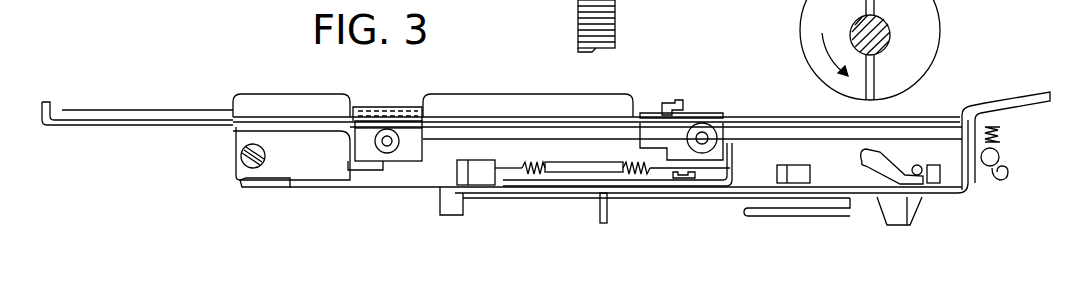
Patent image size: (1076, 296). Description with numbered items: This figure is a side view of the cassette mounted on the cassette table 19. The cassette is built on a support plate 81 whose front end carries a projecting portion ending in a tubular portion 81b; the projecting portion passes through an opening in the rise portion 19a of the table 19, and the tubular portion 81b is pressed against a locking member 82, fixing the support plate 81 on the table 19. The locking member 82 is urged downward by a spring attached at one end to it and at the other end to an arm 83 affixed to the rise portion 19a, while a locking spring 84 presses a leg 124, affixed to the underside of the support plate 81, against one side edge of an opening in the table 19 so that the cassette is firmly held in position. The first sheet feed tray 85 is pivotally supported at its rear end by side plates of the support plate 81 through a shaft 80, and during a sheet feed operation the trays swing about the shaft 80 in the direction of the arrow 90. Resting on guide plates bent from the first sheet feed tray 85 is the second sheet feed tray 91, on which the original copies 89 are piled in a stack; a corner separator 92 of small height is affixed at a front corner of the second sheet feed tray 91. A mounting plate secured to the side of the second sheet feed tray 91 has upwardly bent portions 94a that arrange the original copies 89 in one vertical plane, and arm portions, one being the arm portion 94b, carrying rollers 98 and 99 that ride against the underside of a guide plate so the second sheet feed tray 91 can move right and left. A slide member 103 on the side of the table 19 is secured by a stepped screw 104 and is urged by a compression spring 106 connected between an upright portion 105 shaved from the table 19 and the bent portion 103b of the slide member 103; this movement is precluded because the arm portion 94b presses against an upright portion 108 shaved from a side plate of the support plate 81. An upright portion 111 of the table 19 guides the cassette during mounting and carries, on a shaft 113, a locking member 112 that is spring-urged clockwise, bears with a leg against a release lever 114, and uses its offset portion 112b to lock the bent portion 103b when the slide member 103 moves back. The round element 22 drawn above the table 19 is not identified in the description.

The cassette table 19 is at (483, 193).
The rise portion 19a is at (972, 108).
The wheel 22 is at (936, 25).
The shaft 80 is at (243, 174).
The support plate 81 is at (298, 186).
The tubular portion 81b is at (1008, 177).
The locking member 82 is at (999, 157).
The arm 83 is at (995, 112).
The locking spring 84 is at (1003, 135).
The first sheet feed tray 85 is at (240, 133).
The original copies 89 is at (126, 108).
The arrow 90 is at (608, 54).
The second sheet feed tray 91 is at (118, 126).
The corner separator 92 is at (672, 101).
The upwardly bent portions 94a is at (423, 100).
The arm portion 94b is at (368, 162).
The roller 98 is at (392, 154).
The roller 99 is at (704, 124).
The slide member 103 is at (523, 187).
The bent portion 103b is at (734, 165).
The stepped screw 104 is at (680, 179).
The upright portion 105 is at (456, 162).
The compression spring 106 is at (540, 170).
The upright portion 108 is at (352, 172).
The upright portion 111 is at (818, 176).
The locking member 112 is at (918, 205).
The offset portion 112b is at (862, 152).
The shaft 113 is at (926, 145).
The release lever 114 is at (805, 211).
The leg 124 is at (606, 224).